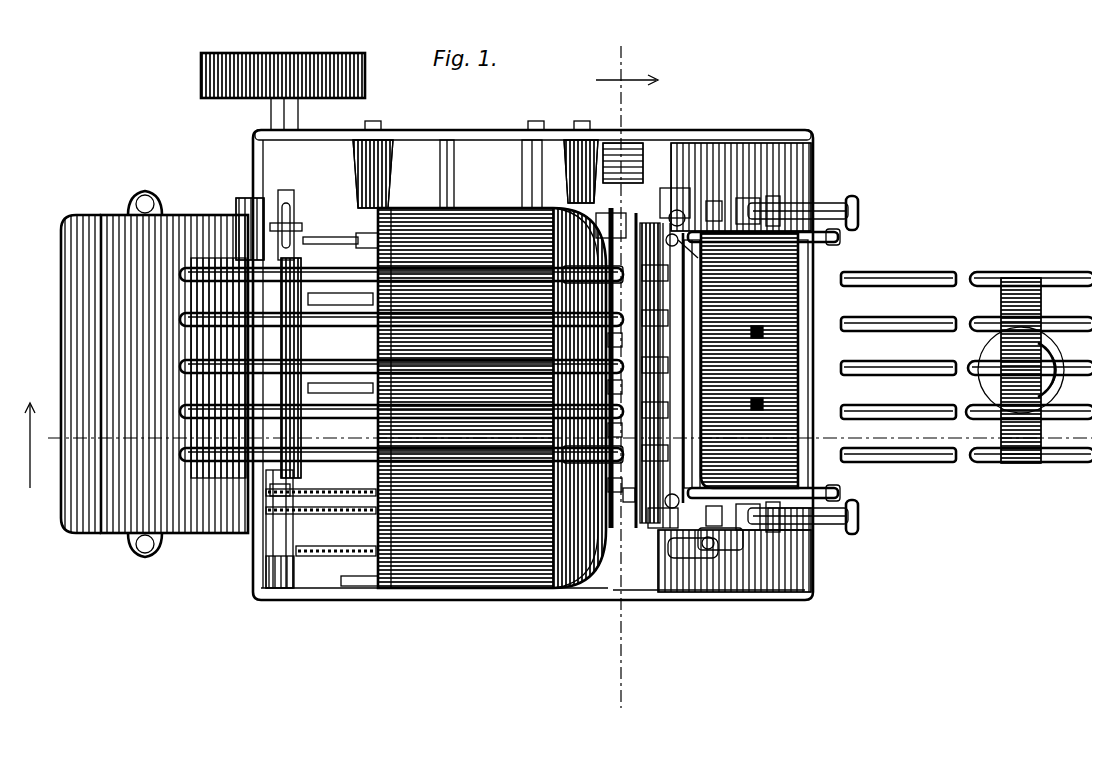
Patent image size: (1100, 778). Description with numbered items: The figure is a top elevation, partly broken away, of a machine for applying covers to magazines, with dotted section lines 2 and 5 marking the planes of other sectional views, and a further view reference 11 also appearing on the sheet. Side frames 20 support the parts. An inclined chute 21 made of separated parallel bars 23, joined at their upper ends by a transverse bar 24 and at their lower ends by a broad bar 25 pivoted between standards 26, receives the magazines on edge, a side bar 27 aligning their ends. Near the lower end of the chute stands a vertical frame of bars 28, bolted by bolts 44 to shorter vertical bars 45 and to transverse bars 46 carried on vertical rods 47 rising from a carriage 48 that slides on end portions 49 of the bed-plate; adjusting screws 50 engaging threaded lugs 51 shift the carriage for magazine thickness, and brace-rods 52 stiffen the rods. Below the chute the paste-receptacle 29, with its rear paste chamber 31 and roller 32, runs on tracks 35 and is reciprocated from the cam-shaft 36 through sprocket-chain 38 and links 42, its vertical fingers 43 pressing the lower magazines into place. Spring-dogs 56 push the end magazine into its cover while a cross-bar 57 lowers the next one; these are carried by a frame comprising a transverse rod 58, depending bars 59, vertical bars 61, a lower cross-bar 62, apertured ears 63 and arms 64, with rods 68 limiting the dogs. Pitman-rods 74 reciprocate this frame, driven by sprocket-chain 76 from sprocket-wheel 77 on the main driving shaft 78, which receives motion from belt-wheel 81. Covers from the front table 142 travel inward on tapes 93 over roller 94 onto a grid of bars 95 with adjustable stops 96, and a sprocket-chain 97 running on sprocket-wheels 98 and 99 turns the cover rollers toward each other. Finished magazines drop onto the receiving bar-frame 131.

The section line 2— 2 is at (558, 435).
The section line 5— 5 is at (627, 370).
The cam 11 is at (763, 479).
The side frames 20 is at (700, 604).
The inclined chute 21 is at (317, 368).
The parallel separated bars 23 is at (173, 268).
The transverse bar 24 is at (232, 338).
The broad bar 25 is at (600, 378).
The standards 26 is at (623, 163).
The side bar 27 is at (228, 245).
The vertical transverse frame of bars 28 is at (650, 205).
The paste-receptacle 29 is at (452, 586).
The paste chamber 31 is at (600, 478).
The paste roller 32 is at (615, 488).
The tracks 35 is at (288, 205).
The cam-shaft 36 is at (604, 443).
The sprocket-chain 38 is at (300, 572).
The links 42 is at (350, 232).
The vertical fingers 43 is at (600, 332).
The bolts 44 is at (670, 250).
The vertical bars 45 is at (746, 360).
The transverse upper and lower bars 46 is at (721, 351).
The vertical rods 47 is at (690, 212).
The carriage 48 is at (761, 386).
The end portions of bed-plate 49 is at (790, 156).
The adjusting screws 50 is at (850, 204).
The internally threaded lugs 51 is at (774, 192).
The brace-rods 52 is at (772, 232).
The spring-dogs 56 is at (604, 272).
The cross-bar 57 is at (600, 420).
The transverse rod 58 is at (662, 408).
The depending bars 59 is at (670, 320).
The vertical bars 61 is at (648, 515).
The lower cross-bar 62 is at (685, 200).
The apertured ears 63 is at (670, 190).
The arms 64 is at (600, 215).
The rods 68 is at (668, 548).
The pitman-rods 74 is at (645, 200).
The sprocket-chain 76 is at (340, 500).
The sprocket-wheel 77 is at (292, 486).
The main driving shaft 78 is at (263, 110).
The belt-wheel 81 is at (292, 52).
The tapes 93 is at (360, 398).
The roller 94 is at (300, 292).
The grid of bars 95 is at (775, 310).
The adjustable stops 96 is at (745, 378).
The sprocket-chain 97 is at (348, 506).
The sprocket-wheel 98 is at (258, 522).
The sprocket-wheel 99 is at (740, 545).
The receiving bar-frame 131 is at (966, 367).
The table 142 is at (154, 374).